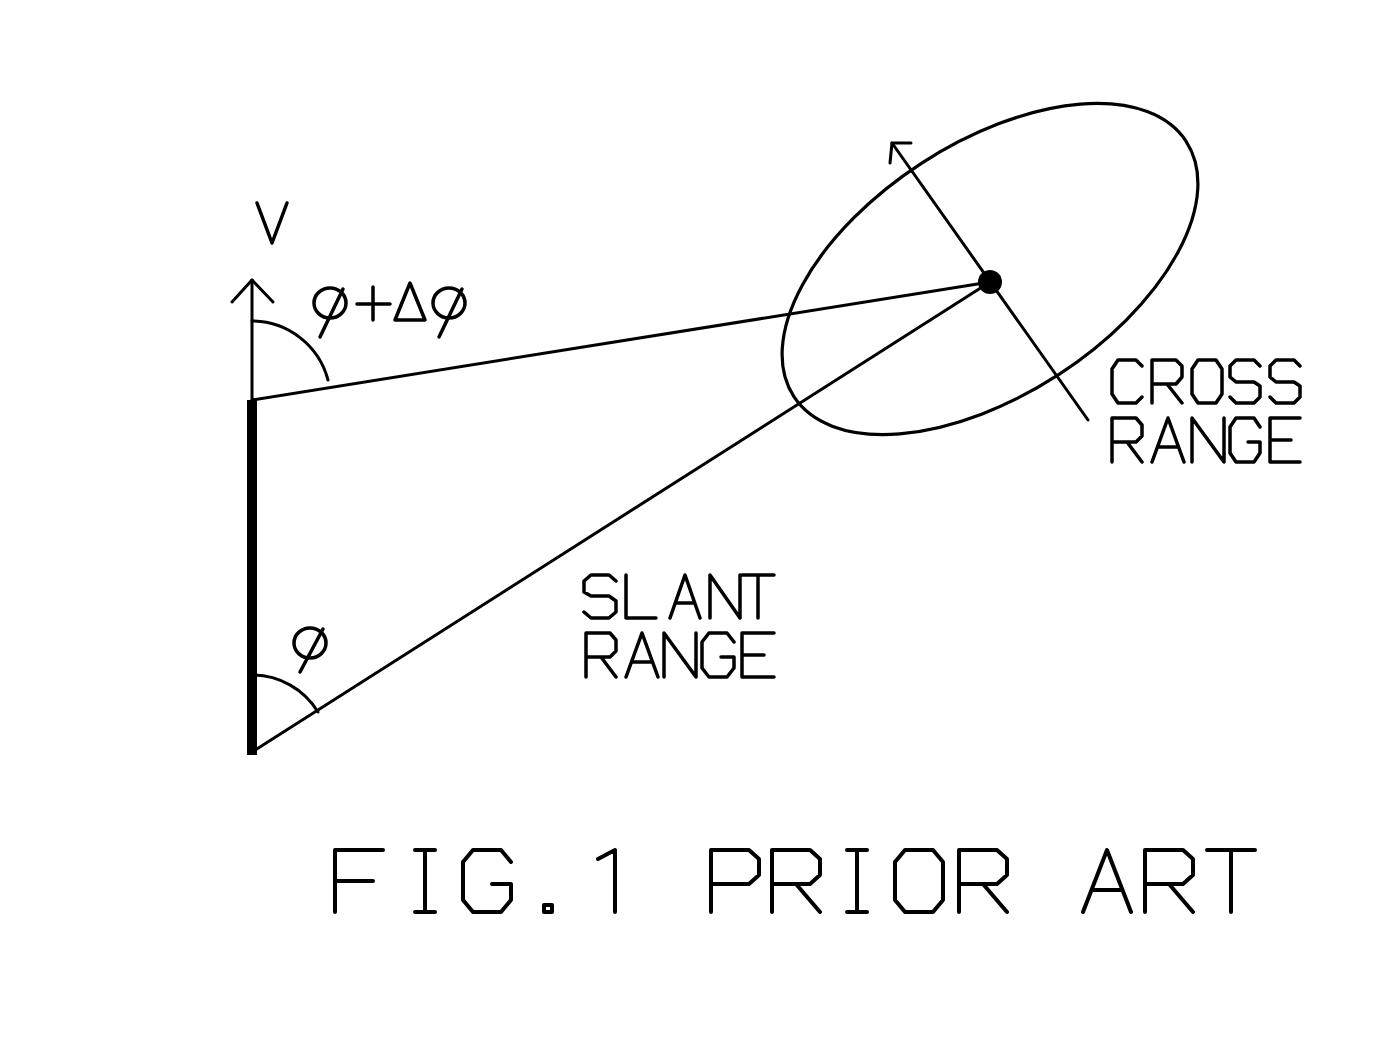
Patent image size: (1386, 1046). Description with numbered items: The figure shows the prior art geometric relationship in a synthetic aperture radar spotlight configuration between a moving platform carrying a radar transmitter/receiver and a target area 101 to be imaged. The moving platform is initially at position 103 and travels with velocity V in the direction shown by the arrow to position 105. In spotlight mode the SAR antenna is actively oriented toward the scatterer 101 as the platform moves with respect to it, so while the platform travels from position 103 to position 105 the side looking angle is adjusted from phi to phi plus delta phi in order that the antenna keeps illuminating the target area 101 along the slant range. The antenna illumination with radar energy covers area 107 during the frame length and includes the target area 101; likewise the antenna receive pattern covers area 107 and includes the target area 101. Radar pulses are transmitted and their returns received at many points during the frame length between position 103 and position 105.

The target area 101 is at (1091, 265).
The initial position 103 is at (179, 750).
The second position 105 is at (179, 396).
The antenna illumination area 107 is at (1318, 125).